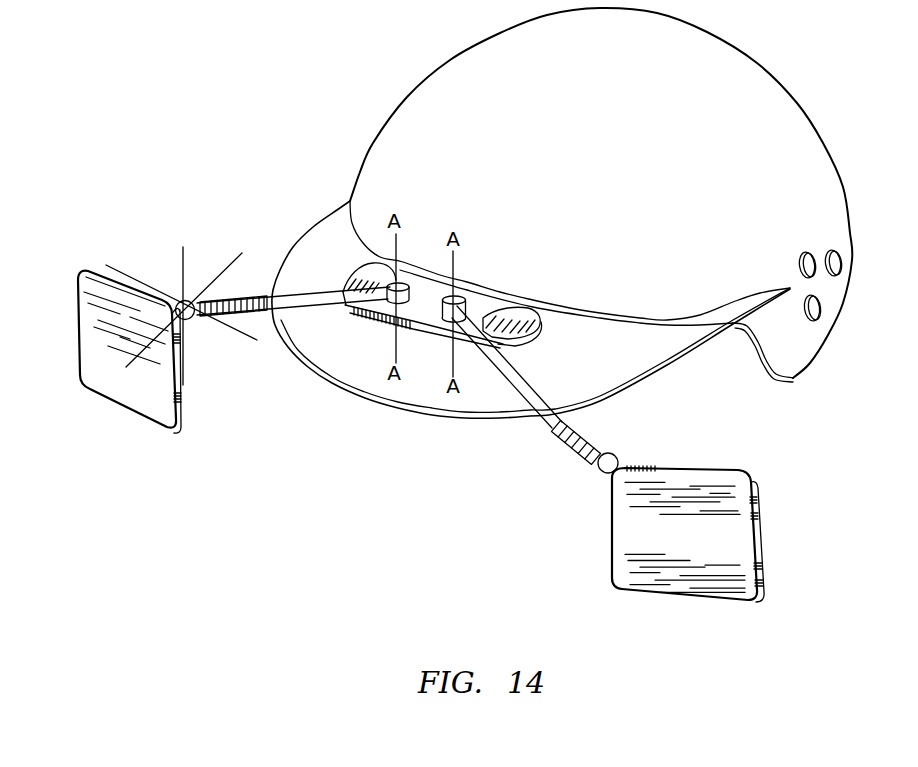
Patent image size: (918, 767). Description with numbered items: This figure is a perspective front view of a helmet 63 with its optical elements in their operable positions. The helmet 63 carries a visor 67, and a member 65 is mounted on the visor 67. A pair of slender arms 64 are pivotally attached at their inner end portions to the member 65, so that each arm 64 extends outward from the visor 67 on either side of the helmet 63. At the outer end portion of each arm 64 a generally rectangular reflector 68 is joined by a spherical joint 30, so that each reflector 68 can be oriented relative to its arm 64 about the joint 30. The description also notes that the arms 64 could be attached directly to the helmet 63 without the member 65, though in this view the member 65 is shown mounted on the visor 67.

The spherical joint 30 is at (194, 322).
The helmet 63 is at (673, 365).
The slender arm 64 is at (294, 311).
The member 65 is at (533, 340).
The visor 67 is at (430, 414).
The rectangular reflector 68 is at (167, 430).